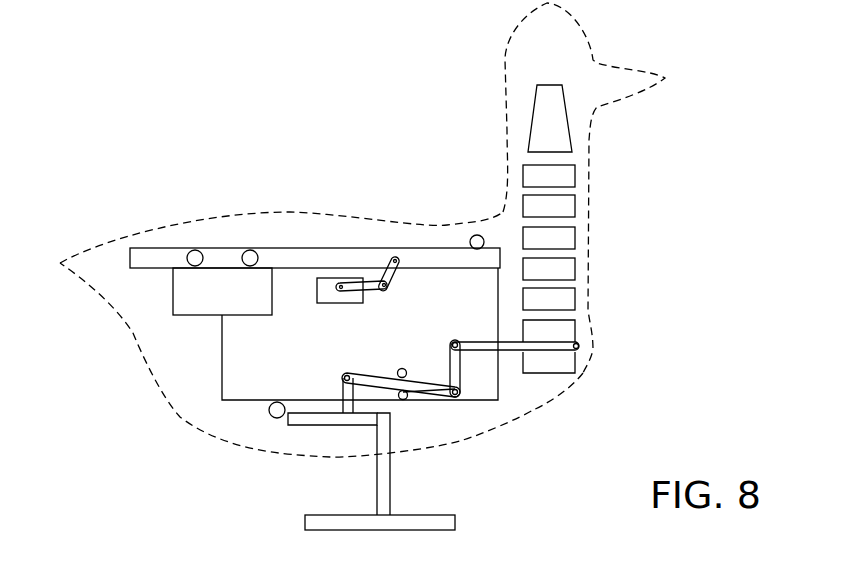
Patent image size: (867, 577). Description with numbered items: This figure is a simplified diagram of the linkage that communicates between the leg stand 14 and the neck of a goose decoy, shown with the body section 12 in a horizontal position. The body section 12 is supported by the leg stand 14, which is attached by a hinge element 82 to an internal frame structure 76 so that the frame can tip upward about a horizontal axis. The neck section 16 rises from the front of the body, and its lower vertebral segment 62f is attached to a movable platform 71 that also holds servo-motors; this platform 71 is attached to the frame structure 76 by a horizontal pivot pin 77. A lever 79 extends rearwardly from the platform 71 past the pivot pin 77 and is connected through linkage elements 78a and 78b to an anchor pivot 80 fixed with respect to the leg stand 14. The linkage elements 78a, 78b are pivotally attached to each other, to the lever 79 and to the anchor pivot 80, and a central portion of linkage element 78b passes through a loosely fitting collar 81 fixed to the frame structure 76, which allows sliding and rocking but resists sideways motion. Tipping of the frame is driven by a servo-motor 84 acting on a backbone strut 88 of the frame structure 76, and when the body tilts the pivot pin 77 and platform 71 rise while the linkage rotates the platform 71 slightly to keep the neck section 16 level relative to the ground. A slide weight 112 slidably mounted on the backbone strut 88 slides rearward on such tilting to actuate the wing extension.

The body section 12 is at (318, 308).
The neck section 16 is at (616, 188).
The lower vertebral segment 62f is at (594, 317).
The backbone strut 88 is at (315, 202).
The slide weight 112 is at (161, 313).
The internal frame structure 76 is at (306, 341).
The servo-motor 84 is at (334, 223).
The anchor pivot 80 is at (358, 386).
The linkage element 78b is at (380, 364).
The collar 81 is at (435, 442).
The linkage element 78a is at (433, 348).
The horizontal pivot pin 77 is at (534, 400).
The lever 79 is at (500, 424).
The movable platform 71 is at (607, 376).
The hinge element 82 is at (218, 454).
The leg stand 14 is at (351, 494).